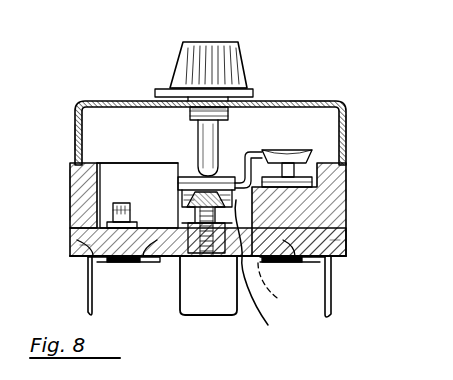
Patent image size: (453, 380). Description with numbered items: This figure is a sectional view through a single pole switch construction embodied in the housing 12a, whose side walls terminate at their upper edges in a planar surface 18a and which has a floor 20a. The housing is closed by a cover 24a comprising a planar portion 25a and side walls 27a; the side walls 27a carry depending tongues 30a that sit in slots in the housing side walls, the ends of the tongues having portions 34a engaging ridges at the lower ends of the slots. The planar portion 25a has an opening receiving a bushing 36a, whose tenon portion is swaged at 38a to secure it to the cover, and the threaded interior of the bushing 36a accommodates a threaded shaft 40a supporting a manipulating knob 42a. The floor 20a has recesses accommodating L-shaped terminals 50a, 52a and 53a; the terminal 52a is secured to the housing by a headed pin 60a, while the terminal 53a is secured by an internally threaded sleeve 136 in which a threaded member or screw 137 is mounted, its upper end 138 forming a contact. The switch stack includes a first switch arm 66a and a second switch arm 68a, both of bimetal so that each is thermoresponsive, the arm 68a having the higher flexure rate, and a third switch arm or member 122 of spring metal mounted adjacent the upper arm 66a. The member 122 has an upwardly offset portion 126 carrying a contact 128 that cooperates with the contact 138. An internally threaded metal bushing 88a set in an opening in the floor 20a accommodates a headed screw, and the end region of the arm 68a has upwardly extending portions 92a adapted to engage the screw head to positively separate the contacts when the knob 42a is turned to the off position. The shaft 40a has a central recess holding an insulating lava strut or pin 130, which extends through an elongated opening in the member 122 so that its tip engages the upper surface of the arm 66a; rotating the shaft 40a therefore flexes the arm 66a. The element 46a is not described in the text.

The housing 12a is at (349, 205).
The planar surface 18a is at (124, 123).
The floor 20a is at (85, 257).
The cover 24a is at (338, 101).
The planar portion 25a is at (318, 100).
The side walls 27a is at (75, 125).
The depending tongues 30a is at (70, 175).
The end portions of tongues 34a is at (90, 233).
The bushing 36a is at (208, 96).
The swaged tenon portion 38a is at (232, 112).
The threaded shaft 40a is at (222, 150).
The manipulating knob 42a is at (180, 46).
The terminal lead 46a is at (270, 271).
The terminal 50a is at (177, 308).
The terminal 52a is at (88, 293).
The terminal 53a is at (328, 316).
The headed pin 60a is at (118, 210).
The first switch arm 66a is at (190, 153).
The second switch arm 68a is at (182, 217).
The internally threaded metal bushing 88a is at (150, 243).
The upwardly extending portions 92a is at (178, 188).
The third switch arm 122 is at (242, 154).
The upwardly offset portion 126 is at (276, 157).
The contact 128 is at (300, 153).
The insulating lava strut or pin 130 is at (200, 133).
The internally threaded sleeve 136 is at (285, 290).
The threaded member or screw 137 is at (285, 256).
The contact 138 is at (290, 172).